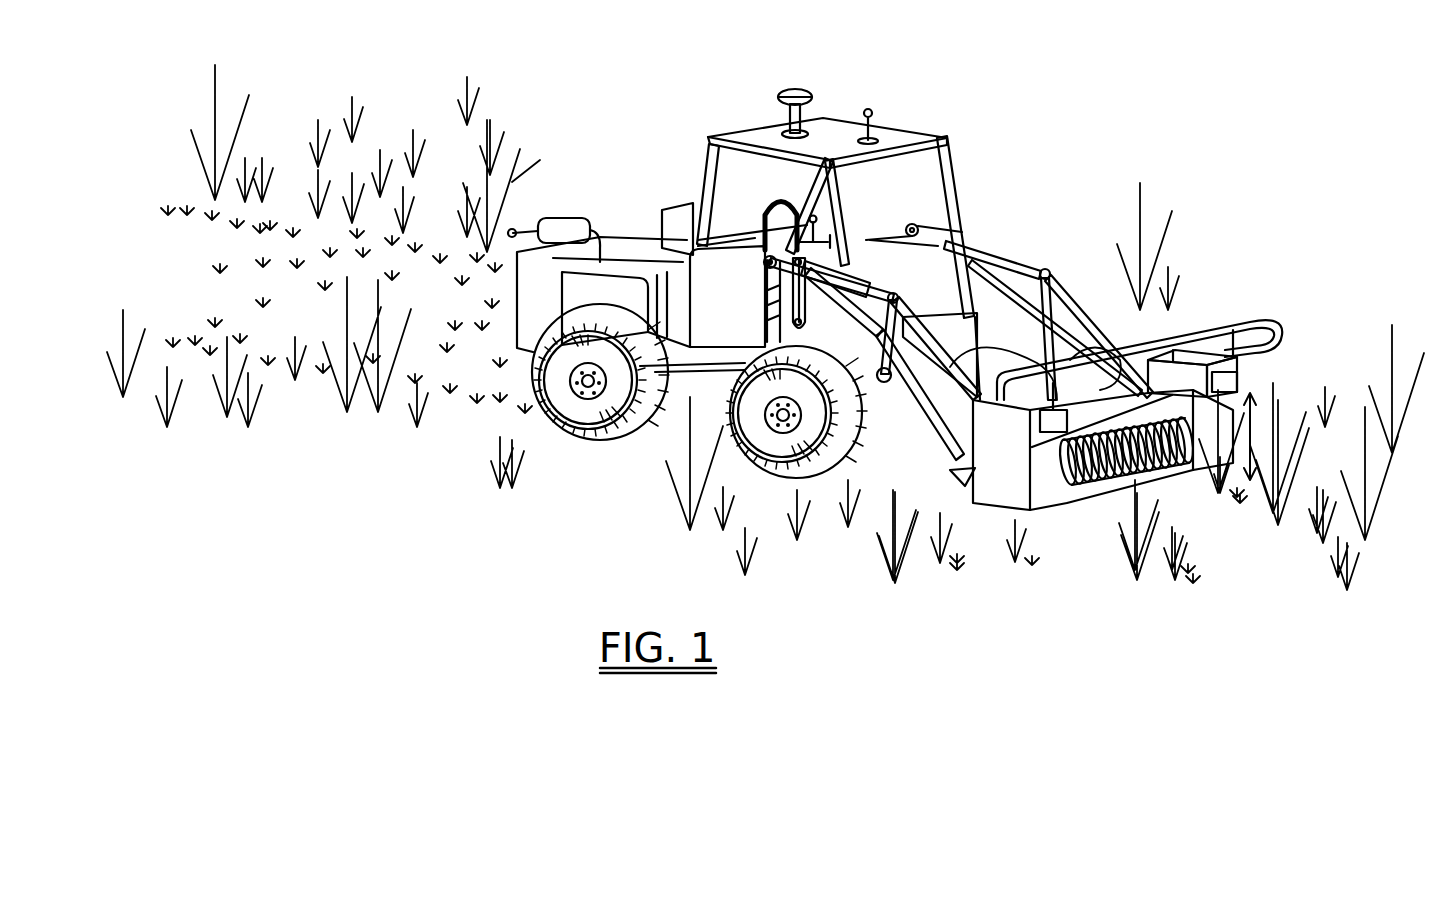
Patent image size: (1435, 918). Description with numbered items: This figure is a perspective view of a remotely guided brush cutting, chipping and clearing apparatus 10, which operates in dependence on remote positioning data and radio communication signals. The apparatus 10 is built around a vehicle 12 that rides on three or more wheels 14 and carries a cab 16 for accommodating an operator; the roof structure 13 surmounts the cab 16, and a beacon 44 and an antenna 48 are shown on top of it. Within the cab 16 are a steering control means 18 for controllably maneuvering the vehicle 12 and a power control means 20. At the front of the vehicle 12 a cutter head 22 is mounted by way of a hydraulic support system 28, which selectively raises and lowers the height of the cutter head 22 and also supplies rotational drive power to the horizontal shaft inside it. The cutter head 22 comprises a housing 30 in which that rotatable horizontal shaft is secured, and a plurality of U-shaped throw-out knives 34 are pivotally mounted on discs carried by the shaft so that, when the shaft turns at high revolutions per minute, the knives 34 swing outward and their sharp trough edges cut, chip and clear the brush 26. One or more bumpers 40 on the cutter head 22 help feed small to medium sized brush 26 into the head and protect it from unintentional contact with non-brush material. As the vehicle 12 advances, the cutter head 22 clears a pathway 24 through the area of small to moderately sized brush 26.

The remotely guided brush cutting, chipping and clearing apparatus 10 is at (619, 561).
The vehicle 12 is at (625, 237).
The cab roof 13 is at (825, 225).
The wheels 14 is at (600, 442).
The cab 16 is at (762, 191).
The steering control means 18 is at (855, 215).
The power control means 20 is at (760, 252).
The cutter head 22 is at (1141, 427).
The pathway 24 is at (157, 281).
The brush 26 is at (1352, 334).
The hydraulic support system 28 is at (1000, 345).
The housing 30 is at (1040, 492).
The U-shaped throw-out knives 34 is at (1172, 470).
The bumpers 40 is at (1217, 330).
The beacon light 44 is at (788, 95).
The antenna 48 is at (872, 112).